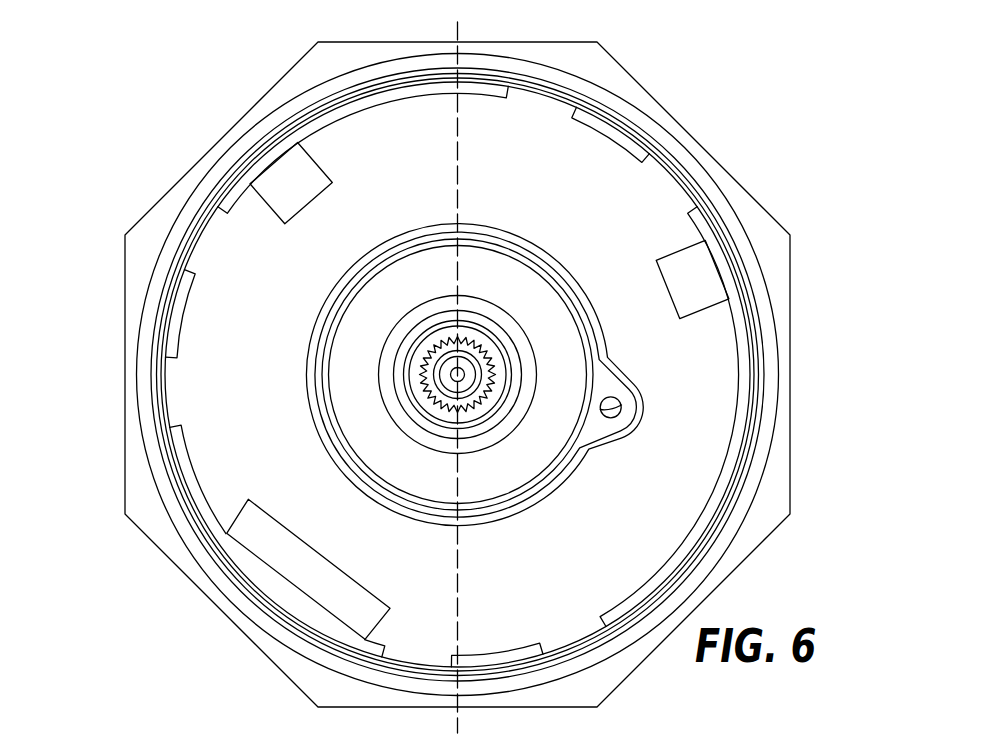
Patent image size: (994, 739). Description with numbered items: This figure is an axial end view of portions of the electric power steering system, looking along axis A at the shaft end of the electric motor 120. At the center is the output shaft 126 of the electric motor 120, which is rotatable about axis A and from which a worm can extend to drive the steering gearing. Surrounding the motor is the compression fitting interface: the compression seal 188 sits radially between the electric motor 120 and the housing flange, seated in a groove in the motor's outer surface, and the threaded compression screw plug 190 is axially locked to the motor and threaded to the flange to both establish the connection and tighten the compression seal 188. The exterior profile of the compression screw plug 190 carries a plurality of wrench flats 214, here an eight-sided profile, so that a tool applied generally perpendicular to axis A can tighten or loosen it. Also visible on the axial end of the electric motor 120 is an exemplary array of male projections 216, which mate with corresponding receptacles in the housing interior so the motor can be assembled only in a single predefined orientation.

The electric motor 120 is at (202, 388).
The output shaft 126 is at (463, 353).
The compression seal 188 is at (501, 374).
The compression screw plug 190 is at (740, 183).
The wrench flats 214 is at (791, 305).
The male projections 216 is at (295, 183).